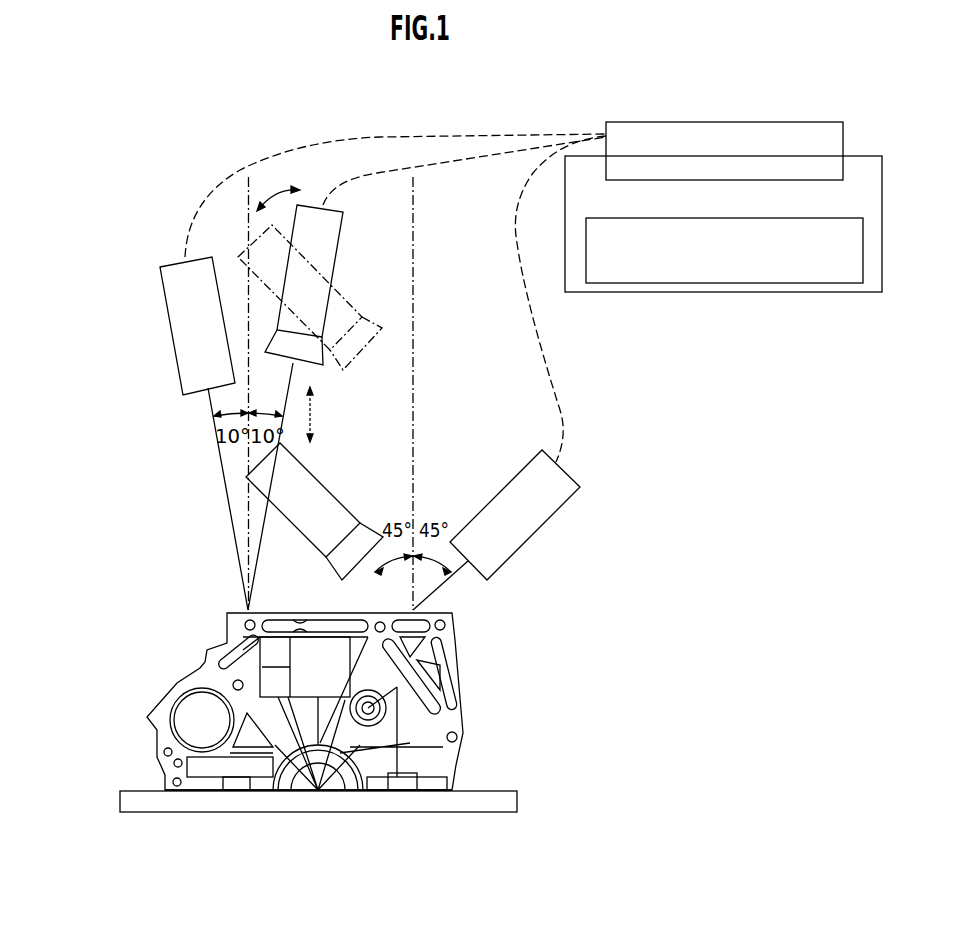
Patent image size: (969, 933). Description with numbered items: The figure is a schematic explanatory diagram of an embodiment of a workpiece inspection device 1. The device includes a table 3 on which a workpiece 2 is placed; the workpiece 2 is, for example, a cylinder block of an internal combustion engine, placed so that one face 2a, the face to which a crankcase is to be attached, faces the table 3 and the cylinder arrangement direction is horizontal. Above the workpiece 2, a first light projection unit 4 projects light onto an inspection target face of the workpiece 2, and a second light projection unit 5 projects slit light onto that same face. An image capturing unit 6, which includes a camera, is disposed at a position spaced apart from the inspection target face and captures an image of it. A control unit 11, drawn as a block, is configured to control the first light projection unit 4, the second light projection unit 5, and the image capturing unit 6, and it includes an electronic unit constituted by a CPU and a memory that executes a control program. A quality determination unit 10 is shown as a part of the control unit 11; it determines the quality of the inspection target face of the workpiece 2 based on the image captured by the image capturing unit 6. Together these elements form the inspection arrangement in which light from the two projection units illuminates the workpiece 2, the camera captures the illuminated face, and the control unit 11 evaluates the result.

The workpiece inspection device 1 is at (108, 228).
The workpiece 2 is at (460, 718).
The one face 2a is at (382, 793).
The table 3 is at (185, 800).
The first light projection unit 4 is at (178, 331).
The second light projection unit 5 is at (563, 478).
The image capturing unit 6 is at (325, 500).
The quality determination unit 10 is at (810, 218).
The control unit 11 is at (790, 122).